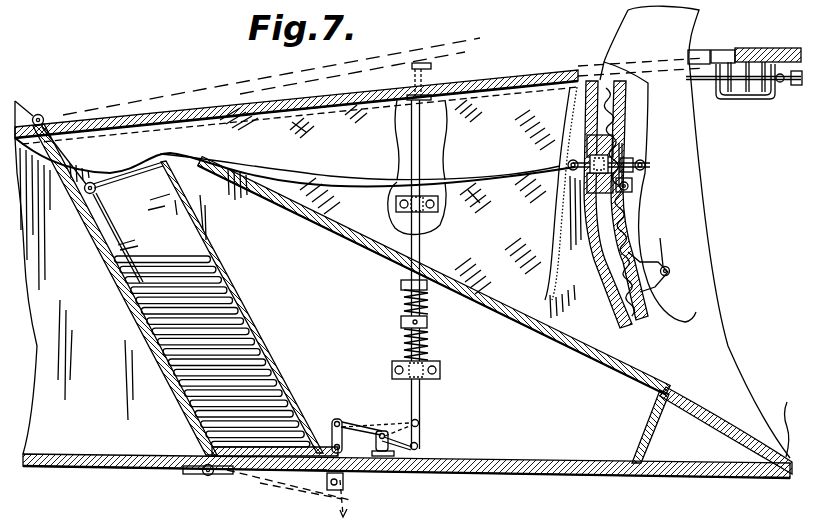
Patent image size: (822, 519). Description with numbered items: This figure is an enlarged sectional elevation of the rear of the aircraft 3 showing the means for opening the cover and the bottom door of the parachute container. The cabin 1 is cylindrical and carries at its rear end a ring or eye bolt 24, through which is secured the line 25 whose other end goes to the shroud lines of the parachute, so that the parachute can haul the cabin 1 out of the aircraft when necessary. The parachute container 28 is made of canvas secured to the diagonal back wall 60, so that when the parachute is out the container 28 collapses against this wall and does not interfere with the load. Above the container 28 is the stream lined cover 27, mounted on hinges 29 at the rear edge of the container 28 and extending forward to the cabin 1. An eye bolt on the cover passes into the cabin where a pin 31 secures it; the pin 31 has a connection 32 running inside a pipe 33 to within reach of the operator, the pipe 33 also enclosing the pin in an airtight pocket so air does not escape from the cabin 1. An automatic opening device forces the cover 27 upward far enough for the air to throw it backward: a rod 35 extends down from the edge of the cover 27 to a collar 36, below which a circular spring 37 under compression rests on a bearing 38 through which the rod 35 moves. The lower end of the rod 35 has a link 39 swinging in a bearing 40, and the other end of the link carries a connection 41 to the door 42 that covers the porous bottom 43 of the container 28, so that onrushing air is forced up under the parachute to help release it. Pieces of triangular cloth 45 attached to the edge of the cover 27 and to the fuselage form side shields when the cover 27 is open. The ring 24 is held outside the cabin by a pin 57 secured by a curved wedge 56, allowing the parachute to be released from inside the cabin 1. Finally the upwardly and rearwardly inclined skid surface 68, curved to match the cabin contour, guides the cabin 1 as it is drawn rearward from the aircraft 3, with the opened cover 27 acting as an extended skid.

The cabin 1 is at (695, 232).
The aircraft 3 is at (526, 468).
The ring bolt 24 is at (606, 204).
The line 25 is at (438, 202).
The cover 27 is at (298, 73).
The parachute container 28 is at (183, 229).
The hinges 29 is at (28, 112).
The pin 31 is at (775, 100).
The connection 32 is at (786, 102).
The pipe 33 is at (797, 104).
The rod 35 is at (421, 133).
The collar 36 is at (427, 324).
The circular spring 37 is at (430, 353).
The bearing 38 is at (441, 373).
The link 39 is at (342, 452).
The bearing 40 is at (391, 447).
The connection 41 is at (331, 437).
The door 42 is at (318, 492).
The porous bottom 43 is at (248, 468).
The triangular cloth 45 is at (295, 150).
The curved wedge 56 is at (620, 147).
The pin 57 is at (636, 202).
The diagonal back wall 60 is at (118, 293).
The skid surface 68 is at (596, 352).